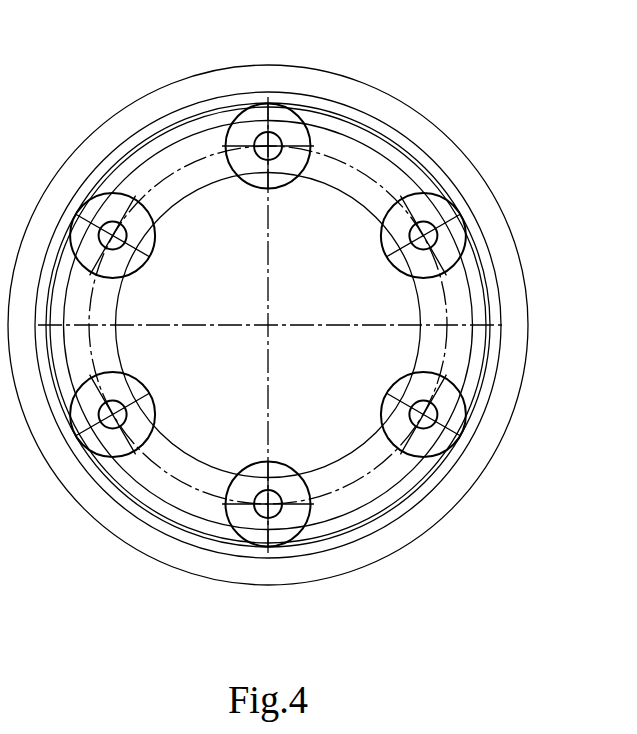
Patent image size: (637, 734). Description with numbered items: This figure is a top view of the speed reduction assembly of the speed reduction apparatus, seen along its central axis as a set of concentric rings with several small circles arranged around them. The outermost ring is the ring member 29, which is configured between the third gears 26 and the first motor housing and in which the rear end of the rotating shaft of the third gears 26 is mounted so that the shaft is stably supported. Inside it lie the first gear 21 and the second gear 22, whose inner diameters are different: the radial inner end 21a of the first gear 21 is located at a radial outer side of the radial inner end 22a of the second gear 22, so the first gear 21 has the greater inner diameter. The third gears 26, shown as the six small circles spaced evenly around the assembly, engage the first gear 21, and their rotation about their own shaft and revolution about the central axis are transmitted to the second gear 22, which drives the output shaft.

The first gear 21 is at (245, 93).
The radial inner end of the first gear 21a is at (202, 100).
The second gear 22 is at (383, 127).
The radial inner end of the second gear 22a is at (169, 112).
The third gears 26 is at (285, 123).
The ring member 29 is at (438, 148).